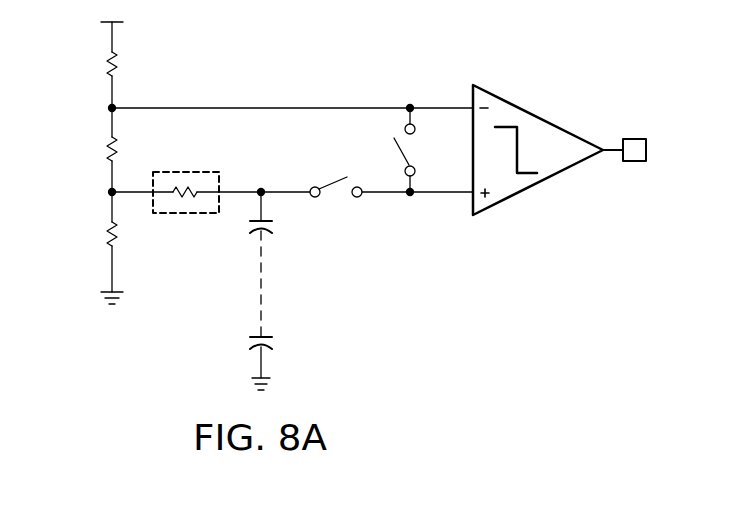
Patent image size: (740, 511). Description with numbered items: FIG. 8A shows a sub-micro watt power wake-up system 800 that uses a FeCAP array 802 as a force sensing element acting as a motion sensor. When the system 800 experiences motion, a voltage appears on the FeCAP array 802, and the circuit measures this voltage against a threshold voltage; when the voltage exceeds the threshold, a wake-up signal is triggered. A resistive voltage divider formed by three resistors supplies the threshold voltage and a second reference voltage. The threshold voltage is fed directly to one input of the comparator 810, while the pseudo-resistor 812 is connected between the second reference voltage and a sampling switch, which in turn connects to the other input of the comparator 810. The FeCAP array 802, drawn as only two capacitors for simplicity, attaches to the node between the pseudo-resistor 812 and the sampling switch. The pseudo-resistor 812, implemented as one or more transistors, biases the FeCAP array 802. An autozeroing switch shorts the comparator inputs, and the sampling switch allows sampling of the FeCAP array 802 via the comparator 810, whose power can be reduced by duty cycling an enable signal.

The sub-micro watt power wake-up system 800 is at (460, 59).
The FeCAP array 802 is at (292, 313).
The comparator 810 is at (540, 183).
The pseudo-resistor 812 is at (178, 217).